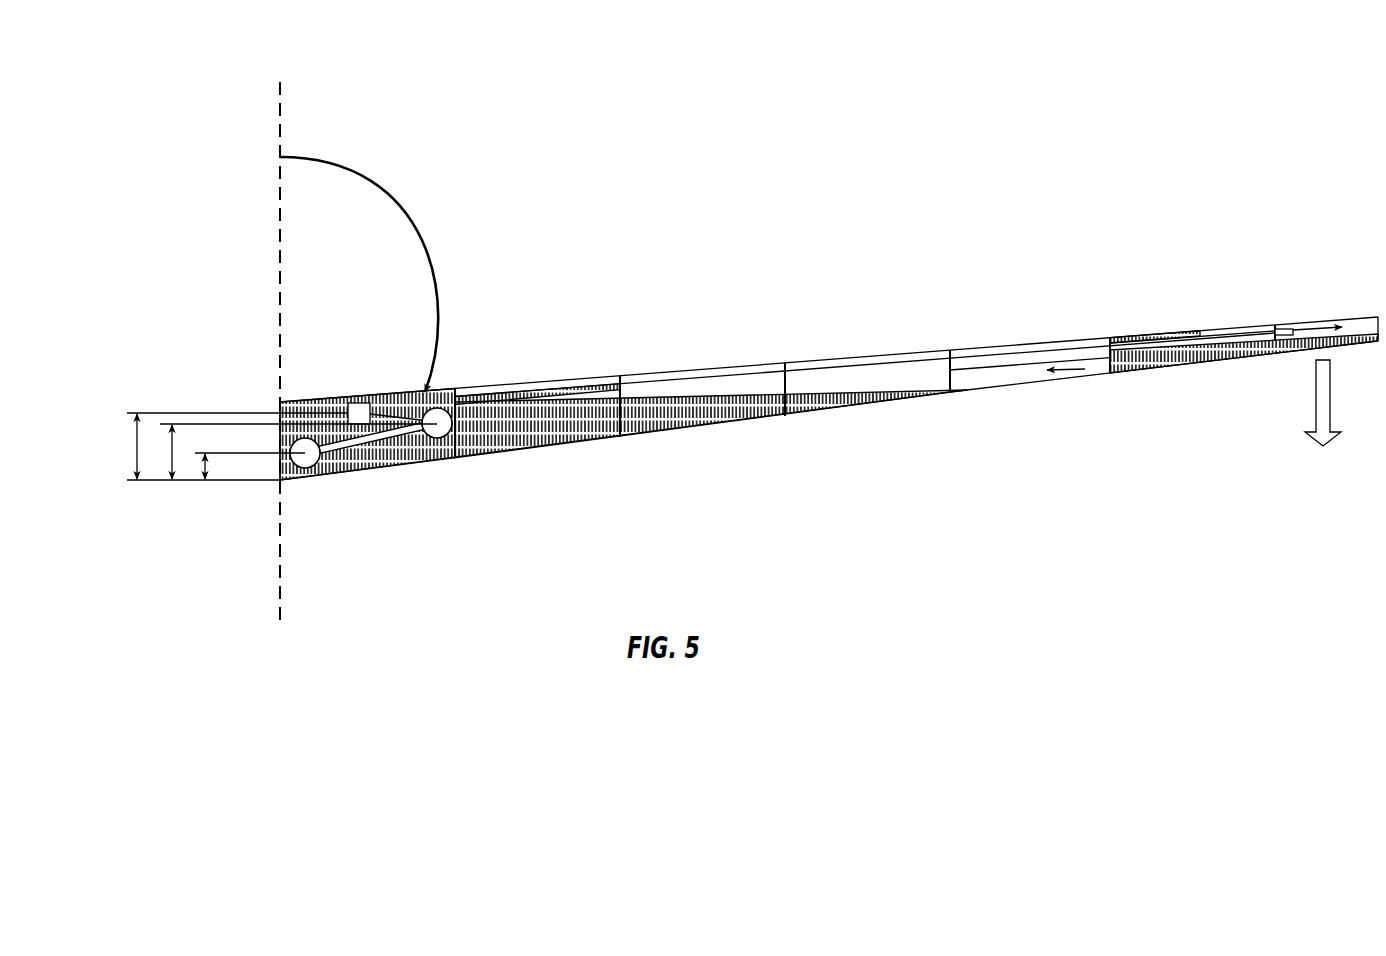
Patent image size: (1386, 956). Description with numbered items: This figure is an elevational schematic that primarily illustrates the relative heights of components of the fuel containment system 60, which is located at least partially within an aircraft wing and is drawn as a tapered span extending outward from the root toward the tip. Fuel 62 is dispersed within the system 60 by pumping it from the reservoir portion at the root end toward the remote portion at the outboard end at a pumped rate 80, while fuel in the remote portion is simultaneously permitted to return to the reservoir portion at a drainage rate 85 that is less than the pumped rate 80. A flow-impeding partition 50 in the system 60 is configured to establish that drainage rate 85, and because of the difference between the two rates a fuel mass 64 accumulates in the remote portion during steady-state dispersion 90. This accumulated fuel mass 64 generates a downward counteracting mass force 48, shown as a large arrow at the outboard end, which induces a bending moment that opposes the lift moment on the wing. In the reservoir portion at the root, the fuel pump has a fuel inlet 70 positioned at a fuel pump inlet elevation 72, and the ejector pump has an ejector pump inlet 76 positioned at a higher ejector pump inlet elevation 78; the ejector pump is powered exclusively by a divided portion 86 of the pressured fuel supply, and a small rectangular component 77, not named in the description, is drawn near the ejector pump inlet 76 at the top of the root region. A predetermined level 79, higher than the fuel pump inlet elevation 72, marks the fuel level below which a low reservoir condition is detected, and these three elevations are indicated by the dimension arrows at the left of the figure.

The downward counteracting mass force 48 is at (1323, 420).
The flow-impeding partition 50 is at (1110, 332).
The fuel containment system 60 is at (887, 256).
The fuel 62 is at (676, 408).
The fuel mass 64 is at (1182, 364).
The fuel inlet 70 is at (321, 464).
The fuel pump inlet elevation 72 is at (203, 463).
The ejector pump inlet 76 is at (444, 404).
The actuator 77 is at (364, 398).
The ejector pump inlet elevation 78 is at (172, 450).
The predetermined level 79 is at (133, 447).
The pumped rate 80 is at (1313, 328).
The drainage rate 85 is at (1085, 368).
The divided portion 86 is at (398, 452).
The steady-state dispersion 90 is at (843, 438).